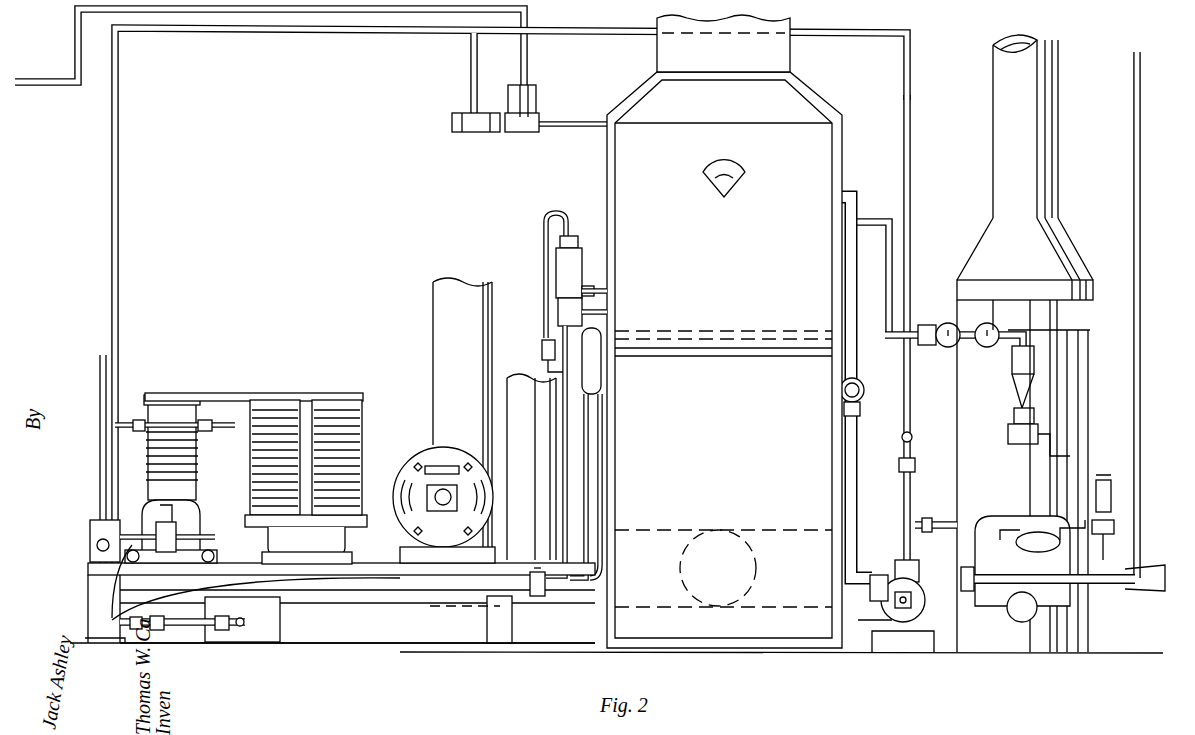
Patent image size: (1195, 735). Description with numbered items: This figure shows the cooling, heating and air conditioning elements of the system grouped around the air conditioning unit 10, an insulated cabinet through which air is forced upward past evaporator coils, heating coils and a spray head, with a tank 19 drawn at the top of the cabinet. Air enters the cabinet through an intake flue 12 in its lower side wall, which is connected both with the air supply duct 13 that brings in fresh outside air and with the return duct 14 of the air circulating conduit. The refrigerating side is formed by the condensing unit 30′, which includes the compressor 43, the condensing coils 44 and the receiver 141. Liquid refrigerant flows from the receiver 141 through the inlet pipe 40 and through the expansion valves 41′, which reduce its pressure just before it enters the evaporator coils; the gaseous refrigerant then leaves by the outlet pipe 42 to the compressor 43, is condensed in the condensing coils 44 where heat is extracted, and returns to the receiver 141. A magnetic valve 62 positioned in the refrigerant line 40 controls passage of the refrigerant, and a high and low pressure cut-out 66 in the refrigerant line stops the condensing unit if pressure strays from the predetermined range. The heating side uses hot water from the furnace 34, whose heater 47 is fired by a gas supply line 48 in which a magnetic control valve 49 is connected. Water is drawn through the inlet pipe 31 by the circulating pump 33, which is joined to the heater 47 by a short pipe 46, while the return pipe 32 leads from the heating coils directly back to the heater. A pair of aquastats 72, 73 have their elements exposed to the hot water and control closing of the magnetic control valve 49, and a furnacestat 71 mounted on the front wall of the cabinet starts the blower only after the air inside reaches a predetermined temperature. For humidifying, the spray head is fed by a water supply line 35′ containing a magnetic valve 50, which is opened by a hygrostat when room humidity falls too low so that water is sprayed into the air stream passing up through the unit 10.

The air conditioning unit 10 is at (822, 147).
The intake flue 12 is at (575, 612).
The air supply duct 13 is at (446, 368).
The return duct 14 is at (536, 483).
The header tank 19 is at (790, 58).
The condensing unit 30′ is at (282, 410).
The inlet pipe 31 is at (860, 435).
The return pipe 32 is at (892, 258).
The circulating pump 33 is at (896, 566).
The furnace 34 is at (1070, 390).
The water supply line 35′ is at (380, 30).
The inlet pipe 40 is at (566, 392).
The expansion valves 41′ is at (581, 276).
The outlet pipe 42 is at (581, 441).
The compressor 43 is at (178, 406).
The condensing coils 44 is at (345, 417).
The short pipe 46 is at (937, 520).
The heater 47 is at (1078, 352).
The gas supply line 48 is at (1141, 410).
The magnetic control valve 49 is at (1113, 498).
The magnetic valve 50 is at (538, 98).
The magnetic valve 62 is at (541, 572).
The high and low pressure cut-out 66 is at (544, 352).
The furnacestat 71 is at (732, 192).
The aquastat 72 is at (946, 346).
The aquastat 73 is at (982, 346).
The receiver 141 is at (270, 641).